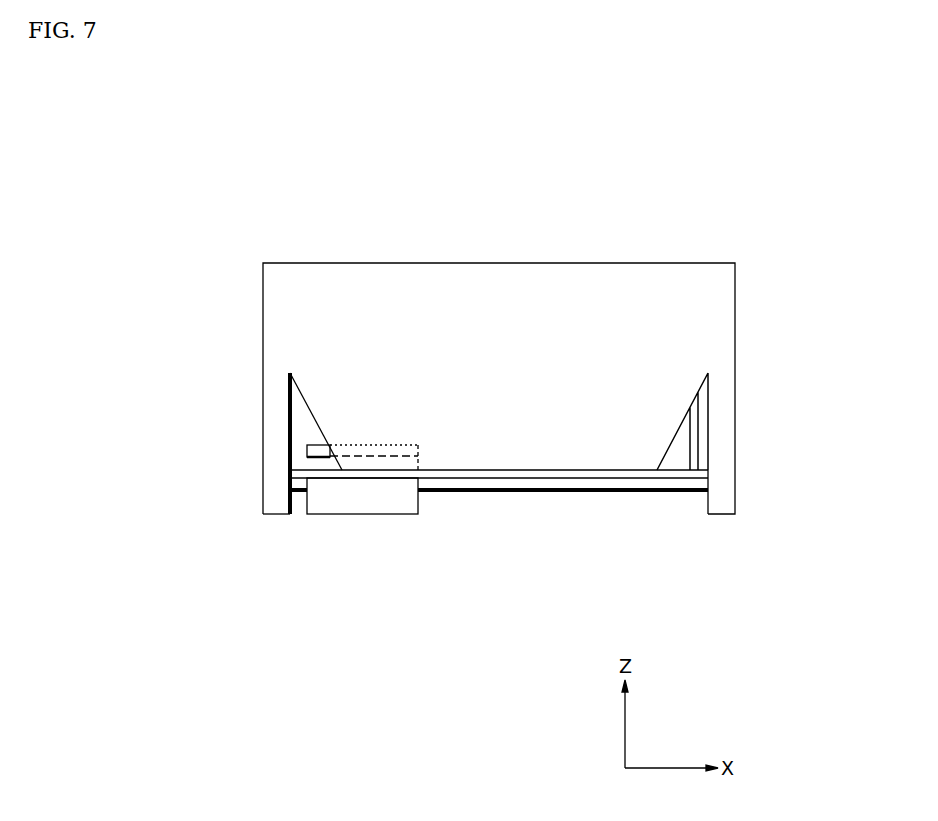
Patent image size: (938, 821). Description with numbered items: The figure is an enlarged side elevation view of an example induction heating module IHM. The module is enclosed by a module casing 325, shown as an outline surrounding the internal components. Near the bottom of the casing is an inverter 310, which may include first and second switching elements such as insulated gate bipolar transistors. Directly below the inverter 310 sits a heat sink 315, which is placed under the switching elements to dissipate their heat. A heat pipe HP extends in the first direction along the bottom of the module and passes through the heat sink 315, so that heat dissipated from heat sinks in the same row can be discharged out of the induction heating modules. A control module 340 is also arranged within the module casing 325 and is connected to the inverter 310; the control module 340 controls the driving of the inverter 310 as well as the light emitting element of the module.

The induction heating module IHM is at (356, 82).
The module casing 325 is at (718, 305).
The control module 340 is at (700, 478).
The heat pipe HP is at (493, 497).
The heat sink 315 is at (360, 505).
The inverter 310 is at (307, 445).